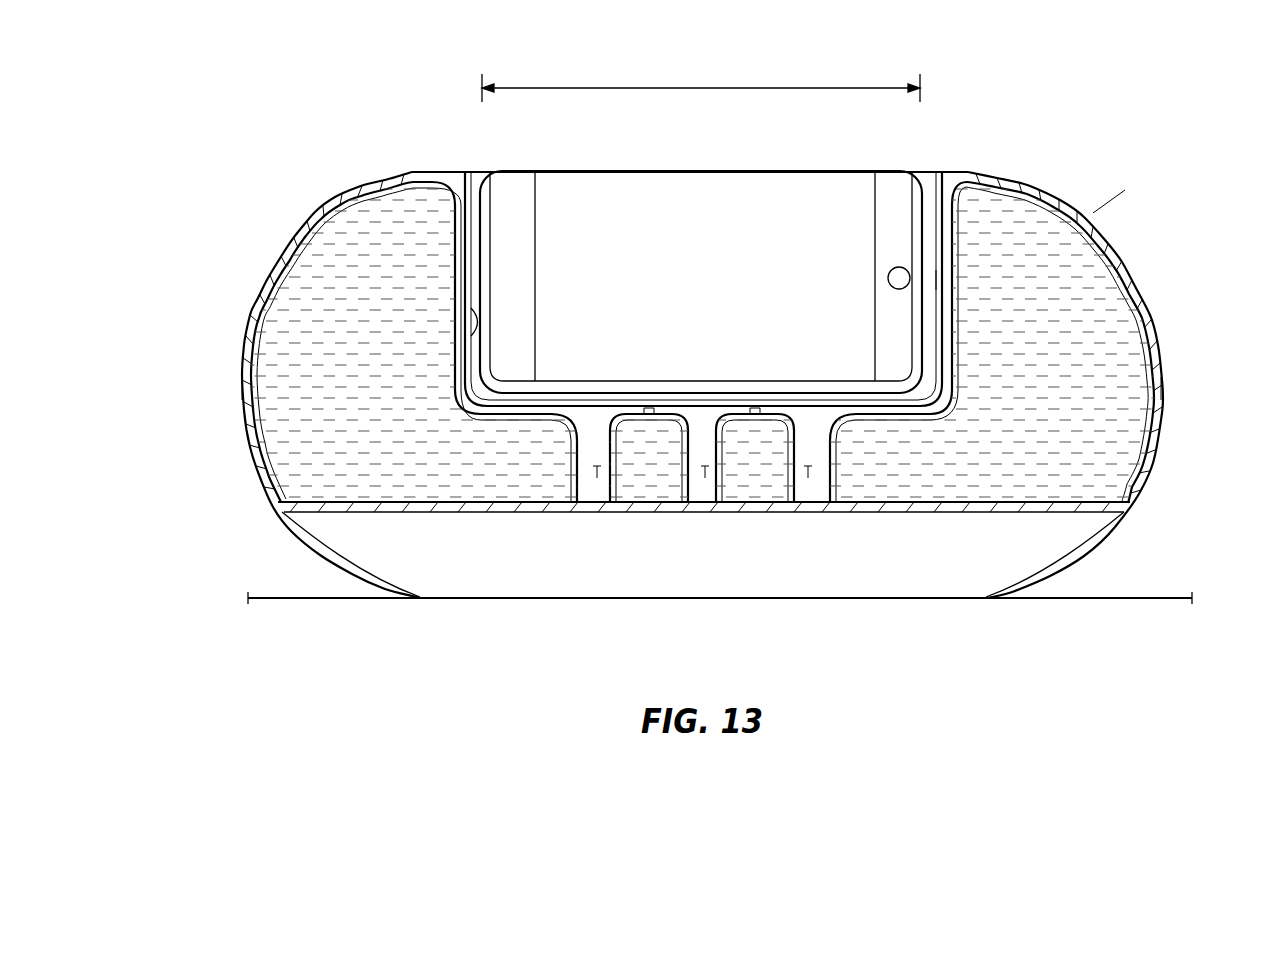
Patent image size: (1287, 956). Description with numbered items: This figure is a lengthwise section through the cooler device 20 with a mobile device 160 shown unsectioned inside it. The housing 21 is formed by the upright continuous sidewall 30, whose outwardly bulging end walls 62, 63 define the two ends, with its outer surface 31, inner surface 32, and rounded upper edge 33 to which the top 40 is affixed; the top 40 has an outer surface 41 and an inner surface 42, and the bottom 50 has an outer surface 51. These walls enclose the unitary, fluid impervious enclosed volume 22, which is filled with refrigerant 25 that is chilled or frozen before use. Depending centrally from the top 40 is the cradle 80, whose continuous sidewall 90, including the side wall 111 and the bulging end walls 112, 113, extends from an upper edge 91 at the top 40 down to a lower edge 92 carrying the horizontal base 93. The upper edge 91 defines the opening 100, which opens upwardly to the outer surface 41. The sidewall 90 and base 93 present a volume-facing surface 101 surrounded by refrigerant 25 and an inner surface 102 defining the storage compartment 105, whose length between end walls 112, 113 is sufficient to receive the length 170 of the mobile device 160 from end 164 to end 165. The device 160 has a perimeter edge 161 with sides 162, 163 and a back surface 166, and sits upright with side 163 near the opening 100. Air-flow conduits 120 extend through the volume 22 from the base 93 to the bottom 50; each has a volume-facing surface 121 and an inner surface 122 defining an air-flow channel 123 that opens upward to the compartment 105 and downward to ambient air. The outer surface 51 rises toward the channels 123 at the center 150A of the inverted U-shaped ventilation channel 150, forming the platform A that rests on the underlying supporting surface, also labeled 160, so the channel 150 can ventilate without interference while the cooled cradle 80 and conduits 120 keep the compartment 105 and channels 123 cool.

The cooler device 20 is at (1080, 120).
The housing 21 is at (1093, 213).
The enclosed volume 22 is at (702, 342).
The refrigerant 25 is at (273, 457).
The continuous sidewall 30 is at (1122, 245).
The outer surface 31 is at (1150, 480).
The inner surface 32 is at (1150, 455).
The upper edge 33 is at (412, 172).
The top 40 is at (960, 171).
The outer surface 41 is at (940, 171).
The inner surface 42 is at (400, 207).
The bottom 50 is at (413, 599).
The outer surface 51 is at (602, 583).
The end wall 62 is at (240, 388).
The end wall 63 is at (1165, 347).
The cradle 80 is at (937, 200).
The continuous sidewall 90 is at (950, 302).
The upper edge 91 is at (450, 195).
The lower edge 92 is at (460, 402).
The base 93 is at (525, 414).
The opening 100 is at (462, 190).
The volume-facing surface 101 is at (953, 362).
The inner surface 102 is at (455, 333).
The storage compartment 105 is at (701, 282).
The side wall 111 is at (466, 235).
The end wall 112 is at (449, 262).
The end wall 113 is at (950, 300).
The air-flow conduit 120 is at (583, 470).
The volume-facing surface 121 is at (560, 445).
The inner surface 122 is at (697, 430).
The air-flow channel 123 is at (592, 470).
The ventilation channel 150 is at (985, 550).
The center 150A is at (910, 513).
The mobile device 160 is at (845, 172).
The perimeter edge 161 is at (755, 171).
The side 162 is at (703, 500).
The side 163 is at (578, 171).
The end 164 is at (482, 273).
The end 165 is at (938, 278).
The back surface 166 is at (715, 243).
The length 170 is at (822, 82).
The platform A is at (640, 600).